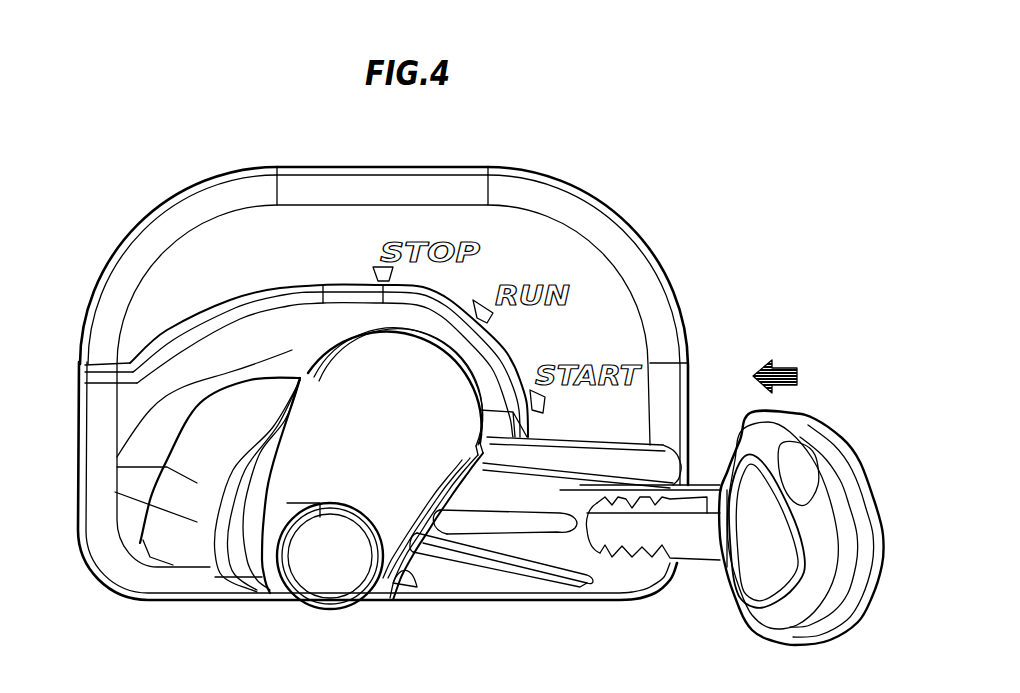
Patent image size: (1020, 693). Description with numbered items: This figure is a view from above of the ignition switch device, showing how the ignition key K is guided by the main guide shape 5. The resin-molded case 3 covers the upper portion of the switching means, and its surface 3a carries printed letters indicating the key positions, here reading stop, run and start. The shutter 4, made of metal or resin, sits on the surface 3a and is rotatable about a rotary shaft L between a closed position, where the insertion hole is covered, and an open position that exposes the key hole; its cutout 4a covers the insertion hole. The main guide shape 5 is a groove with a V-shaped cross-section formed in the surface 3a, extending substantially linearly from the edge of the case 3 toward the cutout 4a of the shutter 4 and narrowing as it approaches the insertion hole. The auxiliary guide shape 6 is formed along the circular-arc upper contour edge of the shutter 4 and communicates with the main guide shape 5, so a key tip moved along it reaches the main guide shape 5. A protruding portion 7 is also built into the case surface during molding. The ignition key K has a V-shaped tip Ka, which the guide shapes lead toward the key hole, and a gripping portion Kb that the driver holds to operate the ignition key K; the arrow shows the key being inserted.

The case 3 is at (690, 318).
The surface of the case 3a is at (177, 300).
The shutter 4 is at (412, 370).
The cutout of the shutter 4a is at (427, 510).
The main guide shape 5 is at (573, 517).
The auxiliary guide shape 6 is at (370, 313).
The protruding portion 7 is at (160, 478).
The rotary shaft L is at (327, 557).
The ignition key K is at (734, 482).
The tip of the ignition key Ka is at (612, 555).
The gripping portion of the ignition key Kb is at (723, 603).